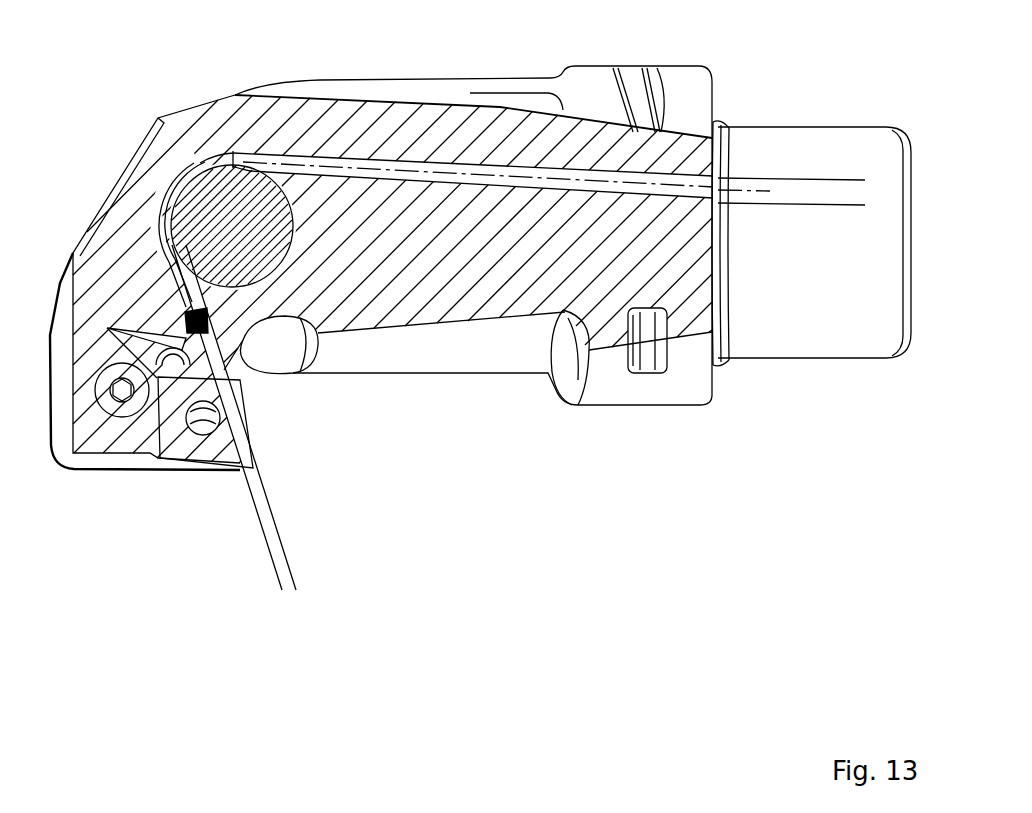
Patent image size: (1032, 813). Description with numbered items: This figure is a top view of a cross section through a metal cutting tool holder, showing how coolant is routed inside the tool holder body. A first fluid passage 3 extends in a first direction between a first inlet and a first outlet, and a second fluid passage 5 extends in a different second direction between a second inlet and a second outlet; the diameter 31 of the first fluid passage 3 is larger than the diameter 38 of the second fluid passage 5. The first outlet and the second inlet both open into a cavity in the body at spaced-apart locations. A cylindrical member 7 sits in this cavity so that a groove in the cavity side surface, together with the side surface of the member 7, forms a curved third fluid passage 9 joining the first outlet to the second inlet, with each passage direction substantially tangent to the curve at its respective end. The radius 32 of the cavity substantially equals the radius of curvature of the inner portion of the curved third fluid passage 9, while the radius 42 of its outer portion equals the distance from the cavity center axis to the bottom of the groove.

The first fluid passage 3 is at (585, 178).
The second fluid passage 5 is at (267, 362).
The member 7 is at (233, 238).
The curved third fluid passage 9 is at (195, 165).
The diameter of the first fluid passage 31 is at (845, 255).
The radius of the cavity 32 is at (185, 175).
The diameter of the second fluid passage 38 is at (187, 600).
The radius of an outer portion of the curved third fluid passage 42 is at (163, 195).